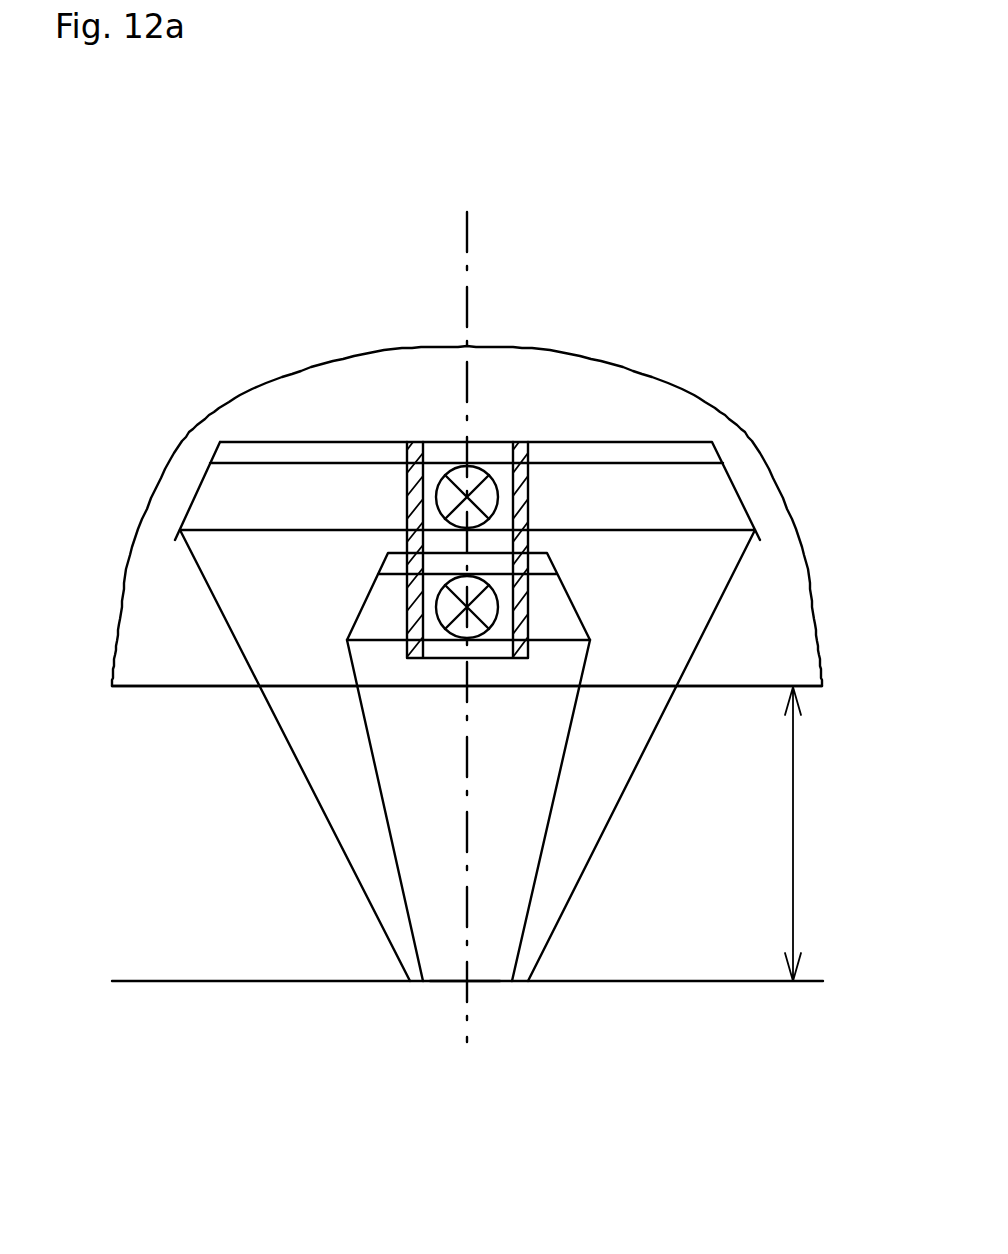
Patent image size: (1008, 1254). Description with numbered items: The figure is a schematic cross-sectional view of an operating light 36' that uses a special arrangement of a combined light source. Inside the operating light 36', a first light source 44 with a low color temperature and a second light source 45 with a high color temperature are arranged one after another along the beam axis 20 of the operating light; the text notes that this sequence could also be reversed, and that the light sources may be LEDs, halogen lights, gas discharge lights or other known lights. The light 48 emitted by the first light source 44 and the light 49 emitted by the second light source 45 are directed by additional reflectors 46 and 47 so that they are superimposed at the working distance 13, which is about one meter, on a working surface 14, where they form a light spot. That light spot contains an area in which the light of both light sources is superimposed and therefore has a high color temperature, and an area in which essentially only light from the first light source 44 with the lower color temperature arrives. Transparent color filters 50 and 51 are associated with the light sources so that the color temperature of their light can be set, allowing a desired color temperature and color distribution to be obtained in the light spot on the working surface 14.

The beam axis 20 is at (467, 235).
The operating light 36' is at (467, 493).
The additional reflector 46 is at (197, 493).
The additional reflector 47 is at (352, 625).
The transparent color filter 50 is at (412, 487).
The transparent color filter 51 is at (417, 585).
The first light source 44 is at (462, 482).
The second light source 45 is at (478, 628).
The light 48 is at (308, 743).
The light 49 is at (415, 843).
The working distance 13 is at (793, 773).
The working surface 14 is at (692, 981).